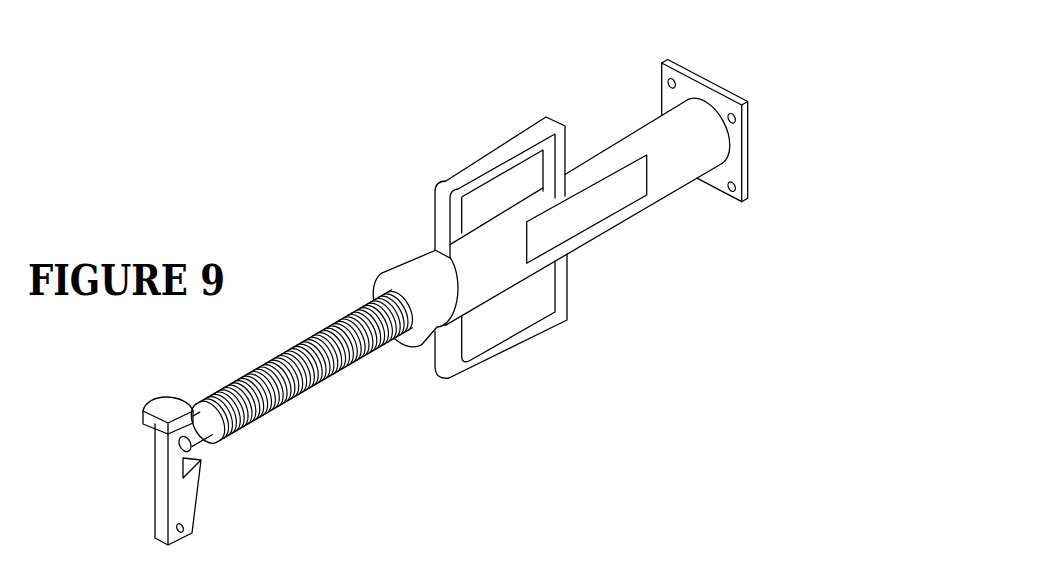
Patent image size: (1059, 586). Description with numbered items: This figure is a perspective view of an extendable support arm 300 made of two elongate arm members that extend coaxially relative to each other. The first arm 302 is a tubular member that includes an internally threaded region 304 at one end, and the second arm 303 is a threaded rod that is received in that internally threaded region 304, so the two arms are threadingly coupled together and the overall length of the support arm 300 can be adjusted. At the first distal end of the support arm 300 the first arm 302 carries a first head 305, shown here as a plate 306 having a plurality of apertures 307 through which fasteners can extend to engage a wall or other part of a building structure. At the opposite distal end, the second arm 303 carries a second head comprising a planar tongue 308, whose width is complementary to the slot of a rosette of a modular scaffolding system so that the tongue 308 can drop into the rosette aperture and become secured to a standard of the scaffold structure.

The support arm 300 is at (453, 137).
The first arm 302 is at (617, 260).
The second arm 303 is at (333, 412).
The internally threaded region 304 is at (382, 258).
The first head 305 is at (737, 210).
The plate 306 is at (688, 90).
The apertures 307 is at (733, 118).
The tongue 308 is at (183, 495).